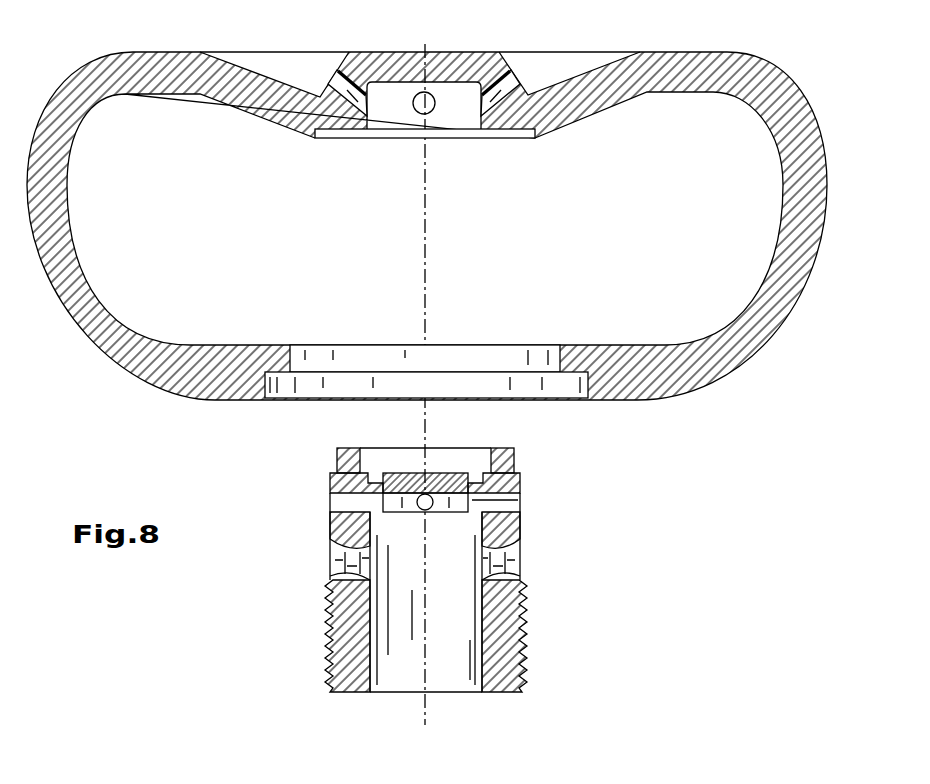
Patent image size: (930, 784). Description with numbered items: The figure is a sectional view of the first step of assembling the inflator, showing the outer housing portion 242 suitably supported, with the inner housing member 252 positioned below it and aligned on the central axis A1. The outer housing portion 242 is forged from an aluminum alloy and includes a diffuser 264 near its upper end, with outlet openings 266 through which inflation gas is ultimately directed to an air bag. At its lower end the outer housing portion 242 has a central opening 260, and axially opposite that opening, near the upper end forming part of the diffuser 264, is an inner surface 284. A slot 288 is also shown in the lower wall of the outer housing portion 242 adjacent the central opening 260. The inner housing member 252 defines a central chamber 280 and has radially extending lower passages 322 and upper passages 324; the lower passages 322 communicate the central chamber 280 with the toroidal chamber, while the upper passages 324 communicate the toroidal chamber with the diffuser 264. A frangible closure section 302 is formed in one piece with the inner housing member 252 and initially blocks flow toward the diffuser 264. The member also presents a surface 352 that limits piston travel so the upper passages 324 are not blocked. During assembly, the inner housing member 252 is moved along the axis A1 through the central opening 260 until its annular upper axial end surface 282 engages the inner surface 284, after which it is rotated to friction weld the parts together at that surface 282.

The outer housing portion 242 is at (685, 57).
The central axis A1 is at (425, 49).
The outlet openings 266 is at (337, 77).
The diffuser 264 is at (493, 62).
The inner surface 284 is at (341, 131).
The upper channel 288 is at (565, 381).
The central opening 260 is at (298, 372).
The upper axial end surface 282 is at (503, 451).
The frangible closure section 302 is at (447, 474).
The upper passages 324 is at (360, 502).
The surface on the piston 352 is at (497, 522).
The inner housing member 252 is at (520, 527).
The lower passages 322 is at (340, 573).
The central chamber 280 is at (476, 598).